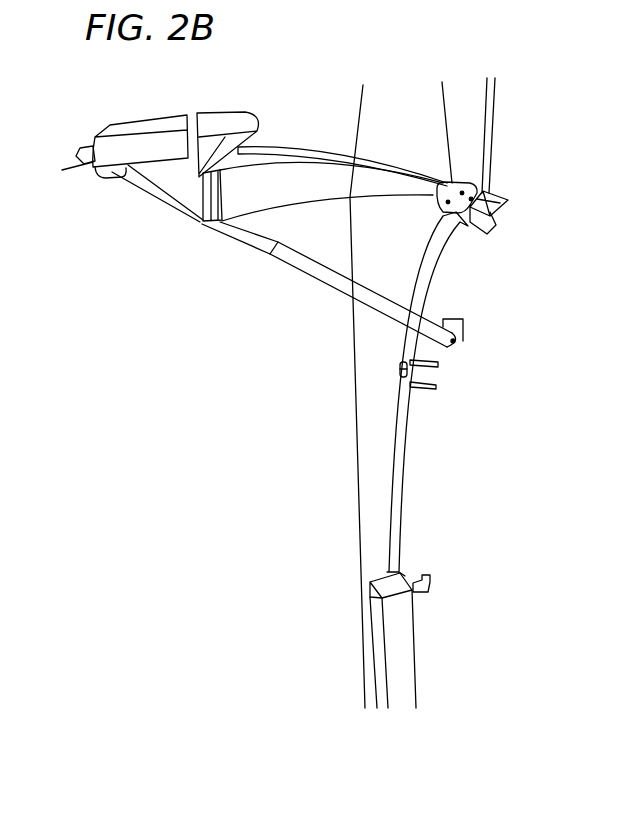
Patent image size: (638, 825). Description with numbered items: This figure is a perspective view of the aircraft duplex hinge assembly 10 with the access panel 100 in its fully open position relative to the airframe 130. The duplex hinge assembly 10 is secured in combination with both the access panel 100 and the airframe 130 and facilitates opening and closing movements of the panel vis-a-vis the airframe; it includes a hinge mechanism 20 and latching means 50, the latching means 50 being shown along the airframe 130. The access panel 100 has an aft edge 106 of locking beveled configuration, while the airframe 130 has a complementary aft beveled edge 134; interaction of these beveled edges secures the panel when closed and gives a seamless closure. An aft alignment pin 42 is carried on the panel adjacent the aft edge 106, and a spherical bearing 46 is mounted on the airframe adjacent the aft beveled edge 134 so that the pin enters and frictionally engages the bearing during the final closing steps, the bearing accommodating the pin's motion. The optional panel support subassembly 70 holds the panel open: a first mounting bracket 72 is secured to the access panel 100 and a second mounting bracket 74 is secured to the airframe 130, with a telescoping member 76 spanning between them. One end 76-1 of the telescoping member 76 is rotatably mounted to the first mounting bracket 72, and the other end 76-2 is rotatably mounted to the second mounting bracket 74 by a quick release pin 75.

The aft edge 106 is at (93, 143).
The access panel 100 is at (296, 137).
The aircraft duplex hinge assembly 10 is at (505, 184).
The hinge mechanism 20 is at (498, 229).
The aft alignment pin 42 is at (77, 177).
The first mounting bracket 72 is at (112, 179).
The end of telescoping member 76-1 is at (142, 182).
The telescoping member 76 is at (250, 244).
The panel support subassembly 70 is at (352, 309).
The airframe 130 is at (412, 236).
The other end of telescoping member 76-2 is at (424, 317).
The second mounting bracket 74 is at (464, 328).
The quick release pin 75 is at (458, 348).
The latching means 50 is at (423, 398).
The aft beveled edge 134 is at (380, 589).
The spherical bearing 46 is at (425, 606).